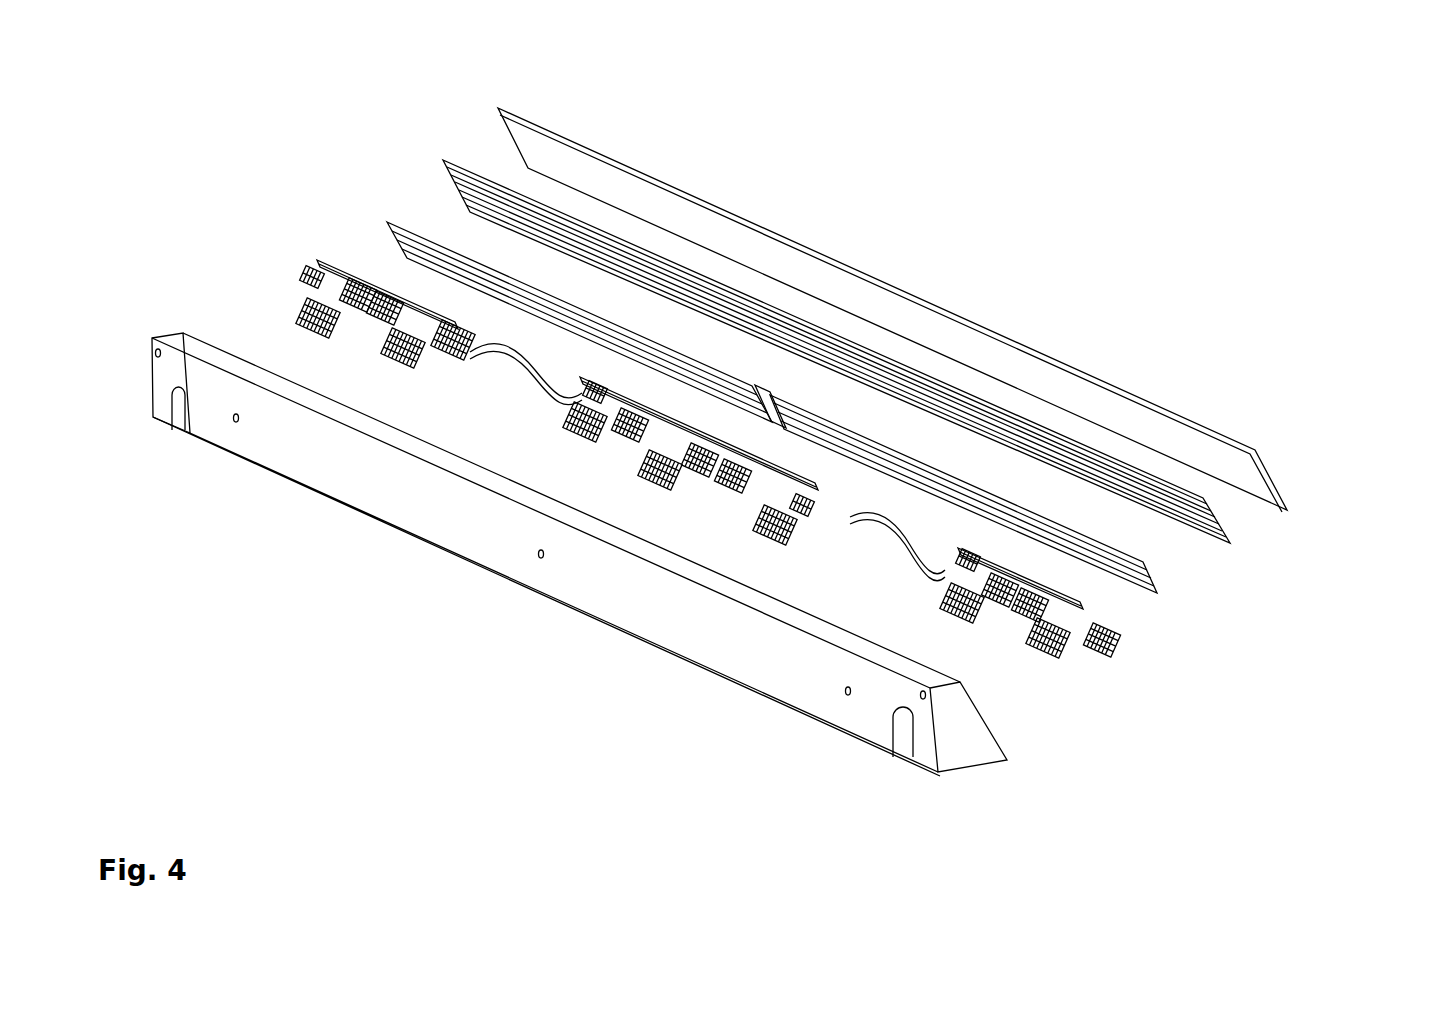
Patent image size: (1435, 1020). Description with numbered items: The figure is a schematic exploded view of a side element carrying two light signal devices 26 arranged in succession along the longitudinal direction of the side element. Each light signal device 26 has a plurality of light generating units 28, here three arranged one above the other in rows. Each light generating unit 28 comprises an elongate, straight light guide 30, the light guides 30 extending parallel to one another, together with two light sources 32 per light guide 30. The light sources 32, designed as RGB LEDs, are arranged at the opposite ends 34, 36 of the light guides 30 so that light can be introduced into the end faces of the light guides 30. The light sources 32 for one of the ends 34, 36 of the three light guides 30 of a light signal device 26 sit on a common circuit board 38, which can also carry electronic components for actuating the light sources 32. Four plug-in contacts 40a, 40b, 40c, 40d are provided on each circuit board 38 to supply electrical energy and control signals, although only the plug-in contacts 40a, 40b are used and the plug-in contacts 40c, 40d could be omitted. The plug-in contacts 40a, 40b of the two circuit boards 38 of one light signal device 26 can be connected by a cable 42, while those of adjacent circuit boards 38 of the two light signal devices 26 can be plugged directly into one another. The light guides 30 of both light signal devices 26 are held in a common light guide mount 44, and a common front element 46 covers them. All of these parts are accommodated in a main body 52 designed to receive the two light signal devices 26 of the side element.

The light signal device 26 is at (195, 158).
The light generating unit 28 is at (362, 150).
The light guide 30 is at (432, 247).
The light source 32 is at (323, 255).
The end 34 is at (798, 381).
The end 36 is at (760, 375).
The circuit board 38 is at (370, 328).
The plug-in contact 40a is at (300, 282).
The plug-in contact 40b is at (458, 366).
The plug-in contact 40c is at (312, 325).
The plug-in contact 40d is at (405, 366).
The cable 42 is at (512, 375).
The light guide mount 44 is at (1230, 543).
The front element 46 is at (1272, 490).
The main body 52 is at (978, 742).